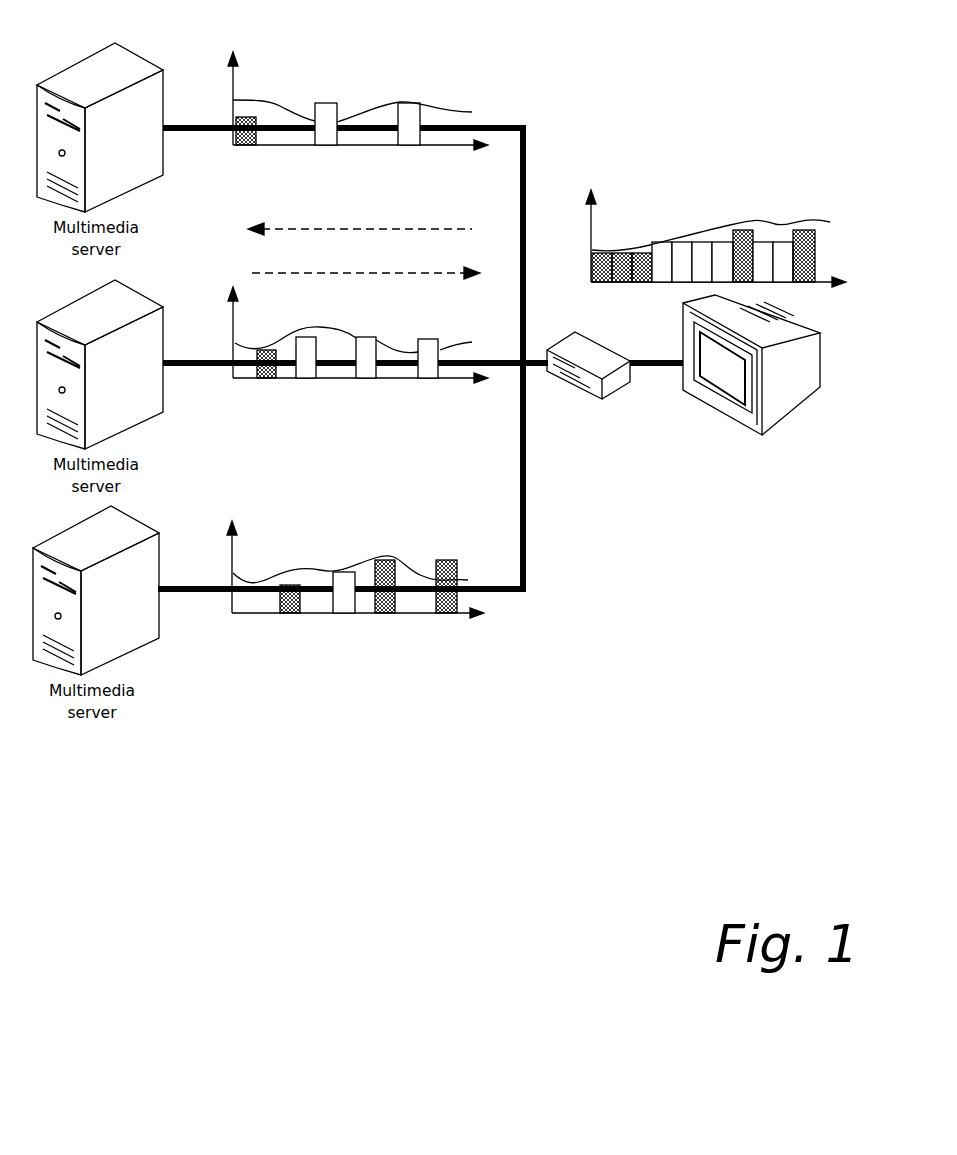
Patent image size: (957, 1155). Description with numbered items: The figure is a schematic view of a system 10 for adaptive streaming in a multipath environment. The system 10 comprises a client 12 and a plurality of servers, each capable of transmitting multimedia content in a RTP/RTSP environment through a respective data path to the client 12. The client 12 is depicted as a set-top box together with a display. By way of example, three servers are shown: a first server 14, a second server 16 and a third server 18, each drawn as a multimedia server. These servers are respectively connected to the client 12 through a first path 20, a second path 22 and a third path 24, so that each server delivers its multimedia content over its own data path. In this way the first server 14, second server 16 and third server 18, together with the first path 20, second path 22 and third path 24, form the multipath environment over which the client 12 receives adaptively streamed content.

The system for adaptive streaming 10 is at (664, 681).
The client 12 is at (835, 477).
The first server 14 is at (145, 648).
The second server 16 is at (152, 418).
The third server 18 is at (152, 175).
The first path 20 is at (513, 597).
The second path 22 is at (500, 368).
The third path 24 is at (499, 126).